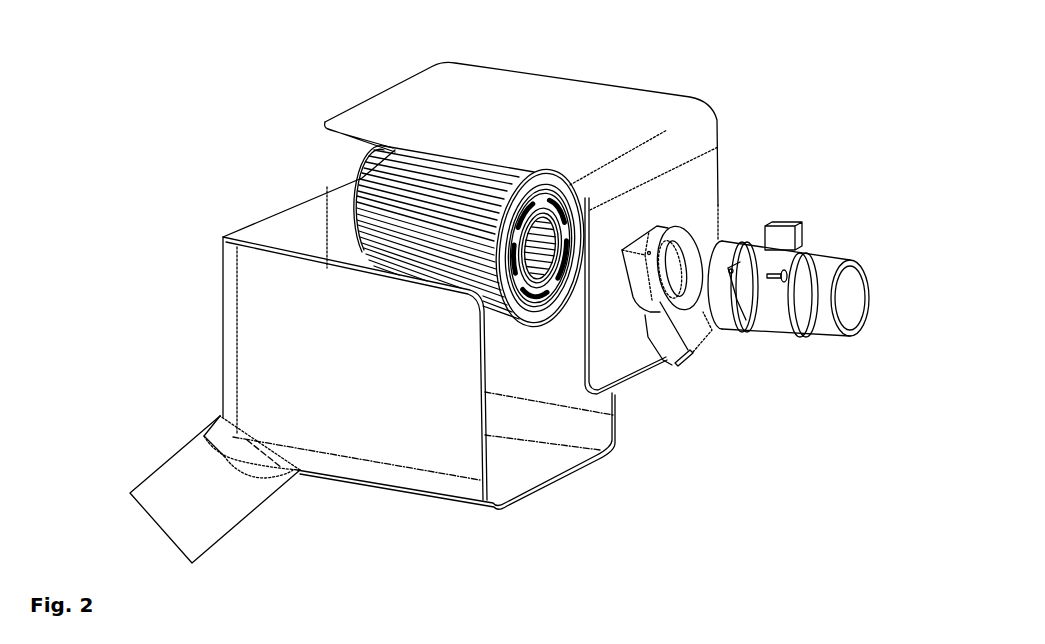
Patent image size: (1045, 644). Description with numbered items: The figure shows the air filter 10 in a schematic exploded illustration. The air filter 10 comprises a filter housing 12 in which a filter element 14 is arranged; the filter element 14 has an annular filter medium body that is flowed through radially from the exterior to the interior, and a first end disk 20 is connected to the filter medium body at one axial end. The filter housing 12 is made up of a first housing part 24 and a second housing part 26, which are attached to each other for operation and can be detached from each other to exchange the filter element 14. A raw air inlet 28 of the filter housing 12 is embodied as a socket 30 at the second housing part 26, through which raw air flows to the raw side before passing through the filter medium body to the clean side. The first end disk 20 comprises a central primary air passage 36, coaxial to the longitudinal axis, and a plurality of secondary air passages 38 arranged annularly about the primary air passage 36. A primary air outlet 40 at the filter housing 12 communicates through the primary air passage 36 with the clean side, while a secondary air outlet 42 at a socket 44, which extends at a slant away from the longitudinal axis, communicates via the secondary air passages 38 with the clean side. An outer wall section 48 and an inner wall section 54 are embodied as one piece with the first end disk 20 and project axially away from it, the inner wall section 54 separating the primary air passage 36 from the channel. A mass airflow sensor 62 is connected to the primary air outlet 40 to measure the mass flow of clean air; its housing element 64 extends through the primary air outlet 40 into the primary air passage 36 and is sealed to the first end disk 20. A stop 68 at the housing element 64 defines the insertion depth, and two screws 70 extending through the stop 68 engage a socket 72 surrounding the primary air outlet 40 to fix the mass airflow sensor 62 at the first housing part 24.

The air filter 10 is at (800, 122).
The filter housing 12 is at (233, 148).
The filter element 14 is at (365, 160).
The first end disk 20 is at (518, 320).
The first housing part 24 is at (420, 85).
The second housing part 26 is at (223, 313).
The raw air inlet 28 is at (150, 525).
The socket 30 is at (172, 468).
The primary air passage 36 is at (546, 243).
The secondary air passages 38 is at (556, 190).
The primary air outlet 40 is at (678, 261).
The secondary air outlet 42 is at (684, 362).
The socket 44 is at (667, 347).
The outer wall section 48 is at (522, 207).
The inner wall section 54 is at (548, 293).
The mass airflow sensor 62 is at (823, 238).
The housing element 64 is at (773, 323).
The stop 68 is at (728, 290).
The screws 70 is at (788, 278).
The socket 72 is at (662, 230).